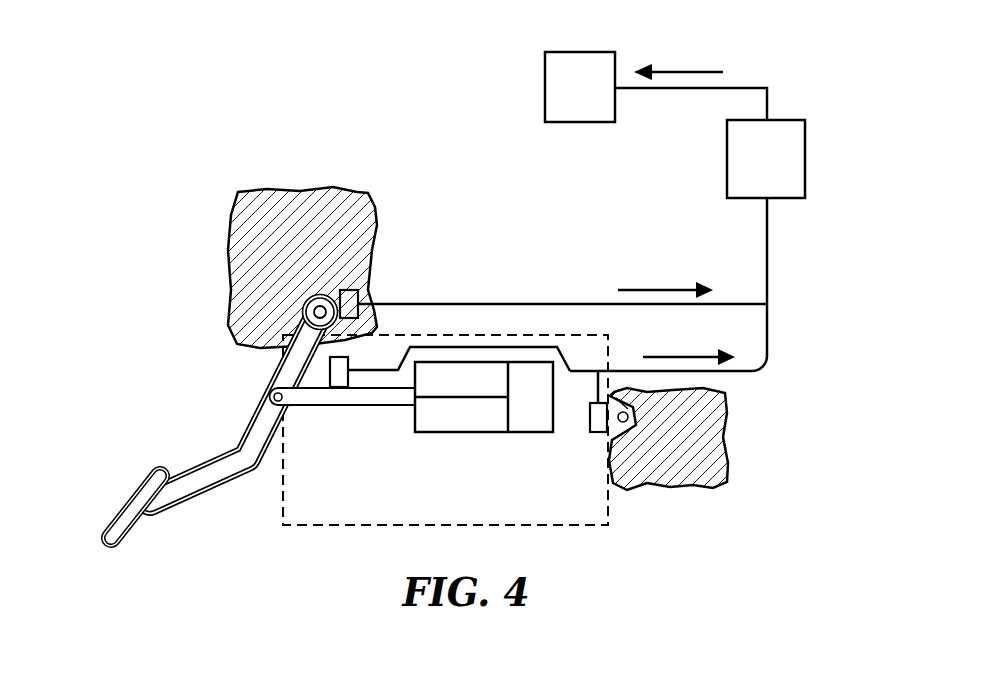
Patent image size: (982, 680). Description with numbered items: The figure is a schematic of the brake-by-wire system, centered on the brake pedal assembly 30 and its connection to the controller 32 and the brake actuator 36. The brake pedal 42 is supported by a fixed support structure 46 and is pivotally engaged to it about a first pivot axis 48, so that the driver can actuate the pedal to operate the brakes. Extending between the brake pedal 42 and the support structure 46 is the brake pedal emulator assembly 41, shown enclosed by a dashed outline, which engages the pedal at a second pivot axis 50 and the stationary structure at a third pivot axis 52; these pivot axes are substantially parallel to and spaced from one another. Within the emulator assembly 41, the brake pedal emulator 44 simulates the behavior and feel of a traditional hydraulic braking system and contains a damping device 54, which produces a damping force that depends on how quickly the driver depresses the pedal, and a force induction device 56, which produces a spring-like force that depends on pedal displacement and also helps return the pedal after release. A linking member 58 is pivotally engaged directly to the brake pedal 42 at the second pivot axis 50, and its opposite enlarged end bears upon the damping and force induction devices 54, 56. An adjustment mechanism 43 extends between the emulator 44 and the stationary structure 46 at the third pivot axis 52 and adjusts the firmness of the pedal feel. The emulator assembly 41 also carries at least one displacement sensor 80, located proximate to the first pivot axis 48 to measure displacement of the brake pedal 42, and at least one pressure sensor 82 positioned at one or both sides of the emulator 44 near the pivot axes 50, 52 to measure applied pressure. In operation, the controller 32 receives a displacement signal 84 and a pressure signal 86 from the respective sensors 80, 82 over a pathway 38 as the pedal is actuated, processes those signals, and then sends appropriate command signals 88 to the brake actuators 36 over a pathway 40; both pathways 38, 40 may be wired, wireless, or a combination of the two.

The brake pedal assembly 30 is at (696, 210).
The controller 32 is at (766, 159).
The actuator 36 is at (580, 87).
The pathway 38 is at (745, 373).
The pathway 40 is at (768, 106).
The brake pedal emulator assembly 41 is at (616, 507).
The brake pedal 42 is at (248, 415).
The adjustment mechanism 43 is at (530, 398).
The brake pedal emulator 44 is at (489, 435).
The support structure 46 is at (327, 206).
The first pivot axis 48 is at (305, 310).
The second pivot axis 50 is at (244, 381).
The third pivot axis 52 is at (627, 423).
The damping device 54 is at (460, 380).
The force induction device 56 is at (460, 414).
The linking member 58 is at (330, 407).
The displacement sensor 80 is at (360, 298).
The pressure sensor 82 is at (353, 363).
The displacement signal 84 is at (661, 288).
The pressure signal 86 is at (696, 355).
The command signal 88 is at (684, 72).